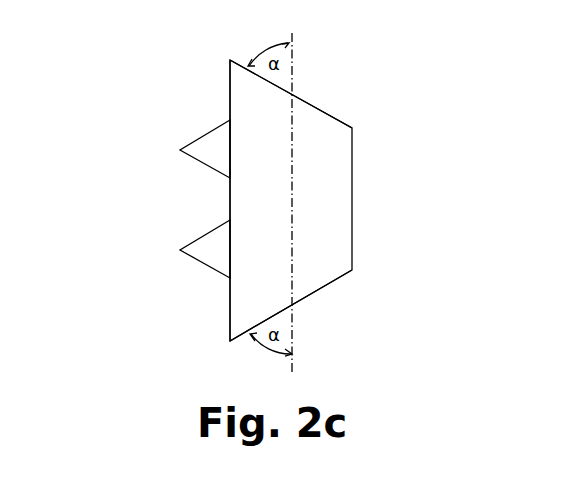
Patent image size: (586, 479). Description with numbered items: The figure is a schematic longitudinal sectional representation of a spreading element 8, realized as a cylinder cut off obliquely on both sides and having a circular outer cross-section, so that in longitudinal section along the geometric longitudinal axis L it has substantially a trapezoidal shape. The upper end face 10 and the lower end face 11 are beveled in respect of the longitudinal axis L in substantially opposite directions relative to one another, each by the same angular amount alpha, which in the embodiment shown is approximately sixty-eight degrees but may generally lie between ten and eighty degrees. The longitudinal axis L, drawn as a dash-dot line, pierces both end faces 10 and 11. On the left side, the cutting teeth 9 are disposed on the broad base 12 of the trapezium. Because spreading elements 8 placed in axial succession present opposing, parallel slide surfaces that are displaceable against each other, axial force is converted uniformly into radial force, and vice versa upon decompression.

The spreading element 8 is at (323, 210).
The cutting teeth 9 is at (213, 142).
The upper end face 10 is at (332, 110).
The lower end face 11 is at (313, 302).
The broad base 12 is at (225, 312).
The geometric longitudinal axis L is at (292, 82).